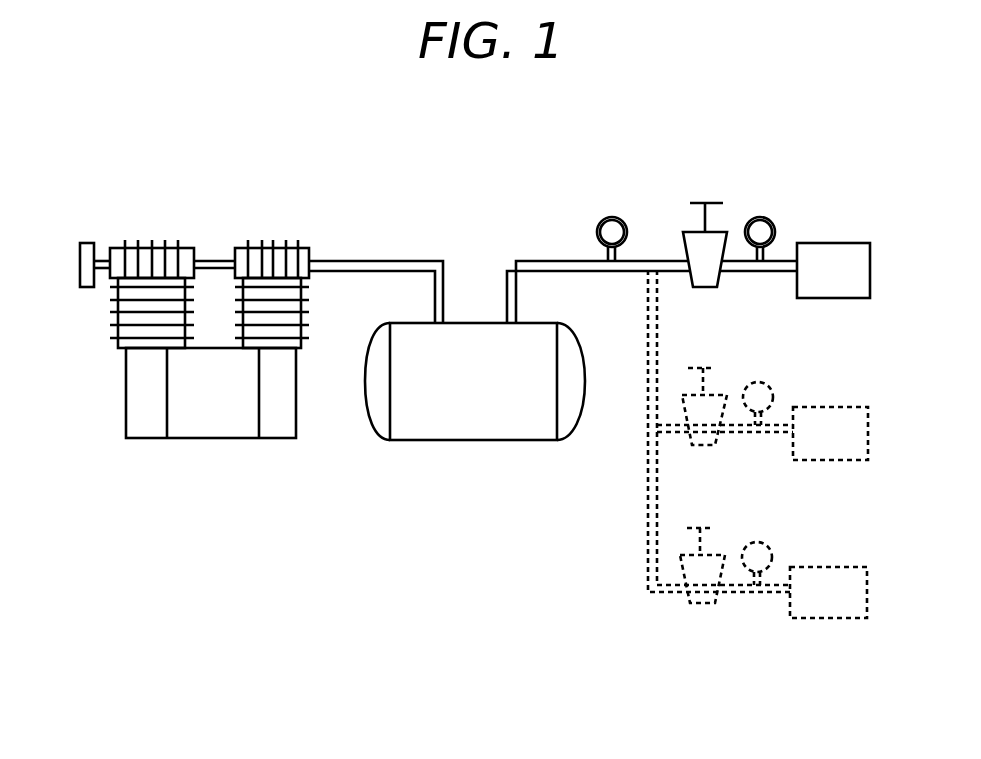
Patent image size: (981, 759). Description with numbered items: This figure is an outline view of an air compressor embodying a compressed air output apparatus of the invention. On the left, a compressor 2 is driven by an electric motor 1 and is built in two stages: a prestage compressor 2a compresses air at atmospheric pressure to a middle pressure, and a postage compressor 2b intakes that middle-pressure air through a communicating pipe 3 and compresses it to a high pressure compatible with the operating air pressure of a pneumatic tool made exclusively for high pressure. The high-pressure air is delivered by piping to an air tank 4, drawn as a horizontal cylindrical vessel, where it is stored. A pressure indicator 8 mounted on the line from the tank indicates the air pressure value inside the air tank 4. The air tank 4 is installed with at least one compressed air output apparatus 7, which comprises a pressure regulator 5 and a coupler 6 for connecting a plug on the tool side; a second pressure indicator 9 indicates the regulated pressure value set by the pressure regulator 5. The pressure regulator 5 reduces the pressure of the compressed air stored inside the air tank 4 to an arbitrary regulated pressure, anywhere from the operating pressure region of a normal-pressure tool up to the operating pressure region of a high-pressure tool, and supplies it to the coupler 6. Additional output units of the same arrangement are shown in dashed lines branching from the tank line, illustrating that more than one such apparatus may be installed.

The electric motor 1 is at (194, 310).
The compressor 2 is at (209, 233).
The prestage compressor 2a is at (145, 242).
The postage compressor 2b is at (264, 253).
The communicating pipe 3 is at (212, 260).
The air tank 4 is at (473, 440).
The pressure regulator 5 is at (705, 203).
The coupler 6 is at (830, 243).
The compressed air output apparatus 7 is at (723, 116).
The pressure indicator 8 is at (612, 217).
The pressure indicator 9 is at (758, 217).